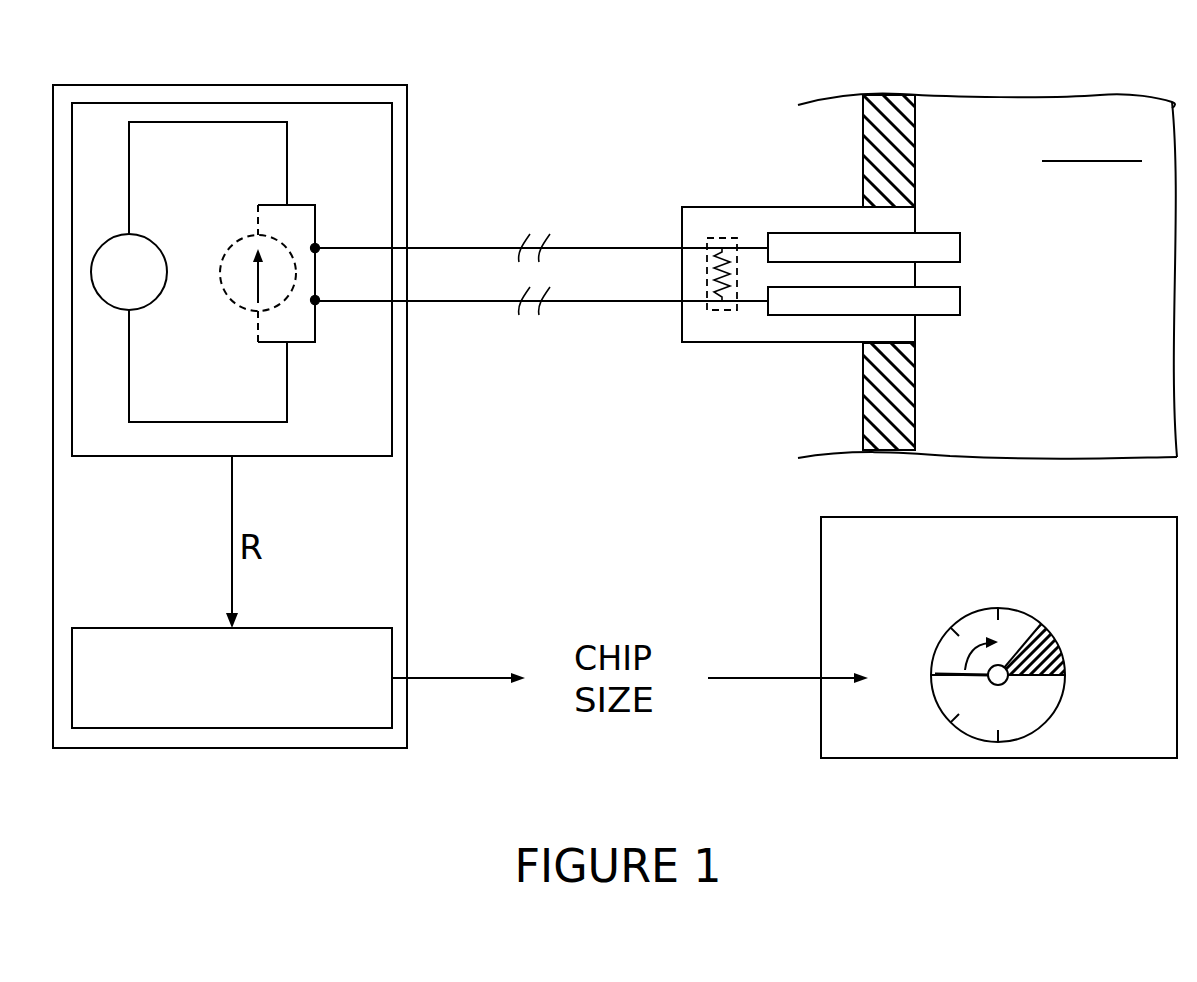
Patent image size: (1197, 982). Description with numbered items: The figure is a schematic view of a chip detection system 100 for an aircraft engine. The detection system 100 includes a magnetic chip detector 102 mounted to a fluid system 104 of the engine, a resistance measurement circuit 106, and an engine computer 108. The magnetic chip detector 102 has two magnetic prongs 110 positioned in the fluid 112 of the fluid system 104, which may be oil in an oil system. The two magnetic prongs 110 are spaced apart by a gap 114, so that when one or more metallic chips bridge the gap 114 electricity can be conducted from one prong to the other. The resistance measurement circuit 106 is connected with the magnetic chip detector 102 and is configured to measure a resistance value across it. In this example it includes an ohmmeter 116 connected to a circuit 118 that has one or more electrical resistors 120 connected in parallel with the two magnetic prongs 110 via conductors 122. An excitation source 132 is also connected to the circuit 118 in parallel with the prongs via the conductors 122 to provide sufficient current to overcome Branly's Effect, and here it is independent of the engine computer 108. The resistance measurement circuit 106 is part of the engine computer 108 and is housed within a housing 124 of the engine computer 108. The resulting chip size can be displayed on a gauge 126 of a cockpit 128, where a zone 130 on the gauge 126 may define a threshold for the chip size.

The detection system 100 is at (622, 129).
The magnetic chip detector 102 is at (723, 342).
The fluid system 104 is at (810, 190).
The resistance measurement circuit 106 is at (393, 143).
The engine computer 108 is at (392, 642).
The magnetic prongs 110 is at (942, 232).
The fluid 112 is at (1120, 204).
The gap 114 is at (952, 273).
The ohmmeter 116 is at (142, 312).
The circuit 118 is at (250, 240).
The electrical resistor 120 is at (722, 238).
The conductors 122 is at (638, 250).
The housing 124 is at (53, 550).
The gauge 126 is at (991, 680).
The cockpit 128 is at (821, 643).
The zone 130 is at (1063, 657).
The excitation source 132 is at (222, 266).